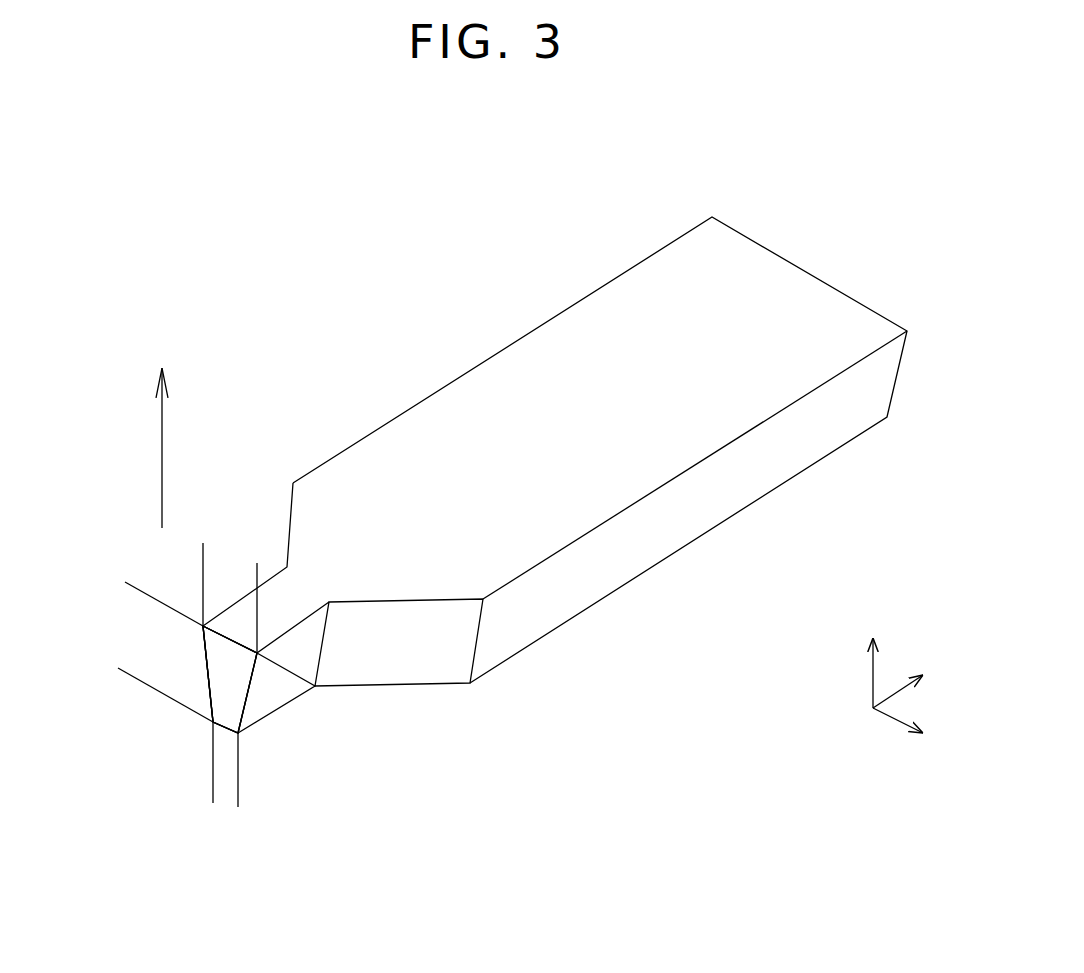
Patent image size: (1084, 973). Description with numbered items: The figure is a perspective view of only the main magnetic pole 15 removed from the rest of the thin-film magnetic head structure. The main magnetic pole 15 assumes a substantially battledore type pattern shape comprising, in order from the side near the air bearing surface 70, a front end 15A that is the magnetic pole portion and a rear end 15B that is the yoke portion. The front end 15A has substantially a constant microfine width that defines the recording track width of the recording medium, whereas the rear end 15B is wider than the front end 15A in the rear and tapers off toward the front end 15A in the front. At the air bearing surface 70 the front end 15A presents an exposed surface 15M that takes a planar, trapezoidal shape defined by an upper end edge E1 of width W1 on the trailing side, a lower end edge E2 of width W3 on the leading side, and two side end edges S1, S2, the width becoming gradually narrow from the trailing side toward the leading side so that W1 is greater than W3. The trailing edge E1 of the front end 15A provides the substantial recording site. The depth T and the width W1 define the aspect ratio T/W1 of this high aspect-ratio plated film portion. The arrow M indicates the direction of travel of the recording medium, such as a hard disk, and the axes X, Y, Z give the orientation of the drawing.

The main magnetic pole 15 is at (618, 233).
The front end 15A is at (270, 698).
The rear end 15B is at (406, 667).
The exposed surface 15M is at (222, 662).
The air bearing surface 70 is at (228, 687).
The side end edge S1 is at (207, 653).
The side end edge S2 is at (257, 673).
The upper end edge E1 is at (225, 642).
The lower end edge E2 is at (226, 735).
The width of upper end edge W1 is at (257, 577).
The width of lower end edge W3 is at (200, 787).
The depth T is at (133, 673).
The direction of travel of the medium M is at (170, 427).
The X axis X is at (909, 729).
The Y axis Y is at (909, 682).
The Z axis Z is at (873, 655).